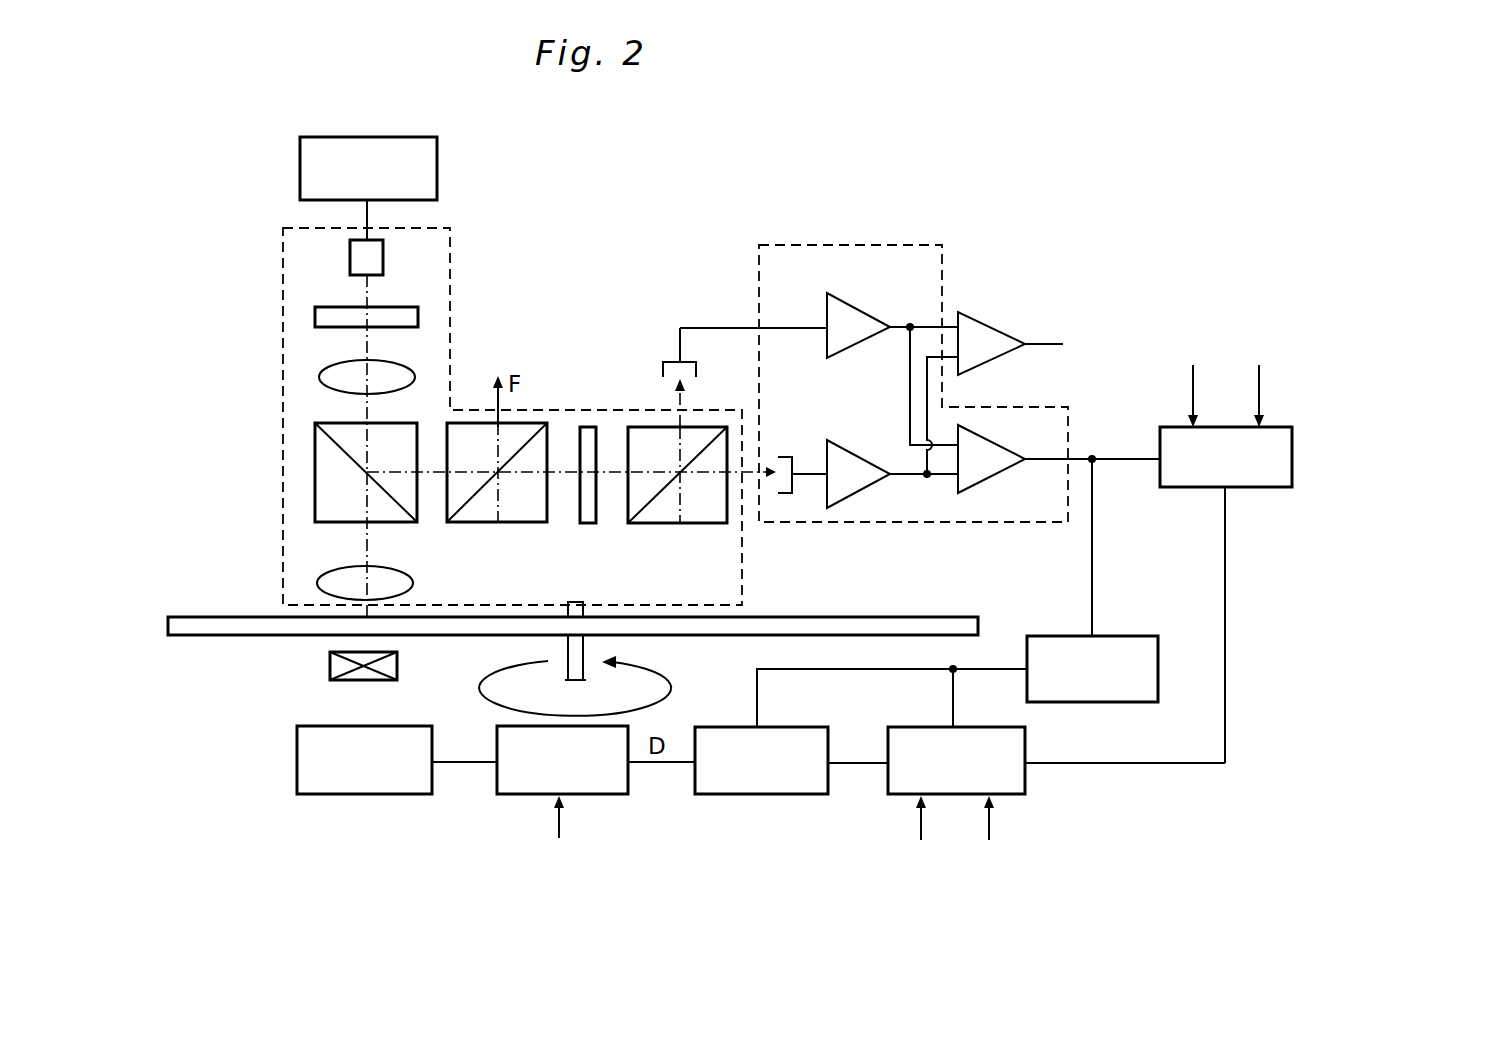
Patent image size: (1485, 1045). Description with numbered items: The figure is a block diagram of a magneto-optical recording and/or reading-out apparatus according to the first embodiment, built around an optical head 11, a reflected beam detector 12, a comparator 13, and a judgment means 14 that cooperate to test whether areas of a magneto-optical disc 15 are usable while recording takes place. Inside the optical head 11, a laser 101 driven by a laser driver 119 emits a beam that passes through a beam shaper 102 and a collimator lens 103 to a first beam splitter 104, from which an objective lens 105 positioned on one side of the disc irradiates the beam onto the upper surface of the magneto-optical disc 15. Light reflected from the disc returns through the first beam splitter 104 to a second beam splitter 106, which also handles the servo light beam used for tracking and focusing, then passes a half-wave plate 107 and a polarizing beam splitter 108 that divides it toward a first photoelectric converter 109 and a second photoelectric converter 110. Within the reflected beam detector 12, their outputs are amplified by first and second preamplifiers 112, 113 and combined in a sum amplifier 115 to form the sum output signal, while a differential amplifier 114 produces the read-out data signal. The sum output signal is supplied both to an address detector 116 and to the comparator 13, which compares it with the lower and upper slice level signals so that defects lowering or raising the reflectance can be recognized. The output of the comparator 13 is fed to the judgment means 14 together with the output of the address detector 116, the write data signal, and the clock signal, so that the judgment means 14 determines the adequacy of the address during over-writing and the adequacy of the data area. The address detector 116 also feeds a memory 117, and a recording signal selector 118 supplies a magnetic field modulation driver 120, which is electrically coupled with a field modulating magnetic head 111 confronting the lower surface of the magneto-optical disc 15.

The optical head 11 is at (455, 284).
The reflected beam detector 12 is at (907, 240).
The comparator 13 is at (1292, 462).
The judgment means 14 is at (1015, 794).
The magneto-optical disc 15 is at (265, 617).
The laser 101 is at (350, 257).
The beam shaper 102 is at (315, 317).
The collimator lens 103 is at (320, 377).
The first beam splitter 104 is at (315, 470).
The objective lens 105 is at (352, 568).
The second beam splitter 106 is at (508, 522).
The half-wave plate 107 is at (588, 523).
The polarizing beam splitter 108 is at (678, 523).
The first photoelectric converter 109 is at (663, 375).
The second photoelectric converter 110 is at (782, 493).
The field modulating magnetic head 111 is at (330, 667).
The first preamplifier 112 is at (826, 305).
The second preamplifier 113 is at (866, 495).
The differential amplifier 114 is at (988, 320).
The sum amplifier 115 is at (985, 480).
The address detector 116 is at (1100, 702).
The memory 117 is at (745, 794).
The recording signal selector 118 is at (527, 794).
The laser driver 119 is at (300, 150).
The magnetic field modulation driver 120 is at (350, 794).